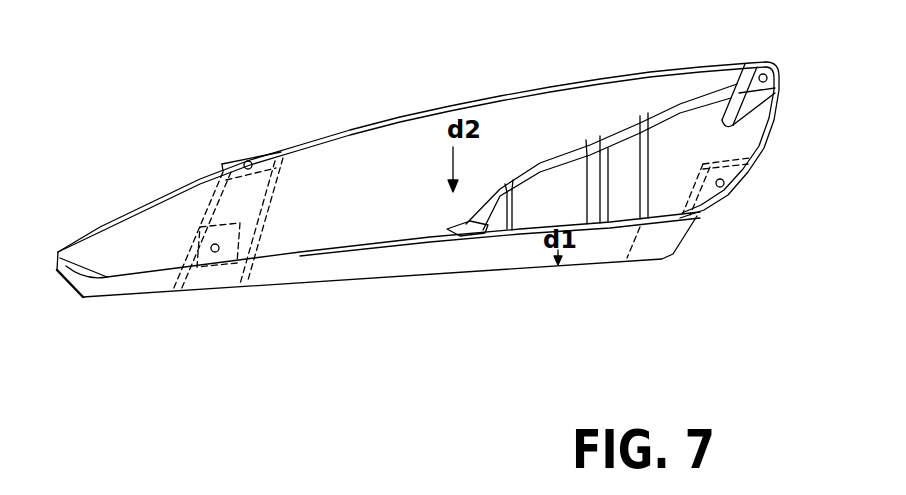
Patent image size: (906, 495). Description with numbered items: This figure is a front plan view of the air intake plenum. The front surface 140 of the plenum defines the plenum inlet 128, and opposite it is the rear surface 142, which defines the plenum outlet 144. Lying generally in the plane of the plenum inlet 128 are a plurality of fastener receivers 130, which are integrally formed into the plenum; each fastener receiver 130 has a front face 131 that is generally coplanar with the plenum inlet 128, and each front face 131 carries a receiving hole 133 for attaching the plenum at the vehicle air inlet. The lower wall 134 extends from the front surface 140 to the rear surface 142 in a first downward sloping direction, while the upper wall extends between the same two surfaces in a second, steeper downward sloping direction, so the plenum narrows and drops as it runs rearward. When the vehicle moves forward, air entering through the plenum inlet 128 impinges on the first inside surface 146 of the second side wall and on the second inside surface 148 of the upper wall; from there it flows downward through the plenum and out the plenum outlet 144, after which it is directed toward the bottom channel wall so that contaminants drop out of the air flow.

The plenum inlet 128 is at (537, 97).
The fastener receiver 130 is at (767, 80).
The front face 131 is at (273, 157).
The receiving hole 133 is at (248, 158).
The lower wall 134 is at (367, 262).
The front surface 140 is at (373, 122).
The rear surface 142 is at (453, 237).
The plenum outlet 144 is at (473, 236).
The first inside surface 146 is at (668, 143).
The second inside surface 148 is at (400, 137).